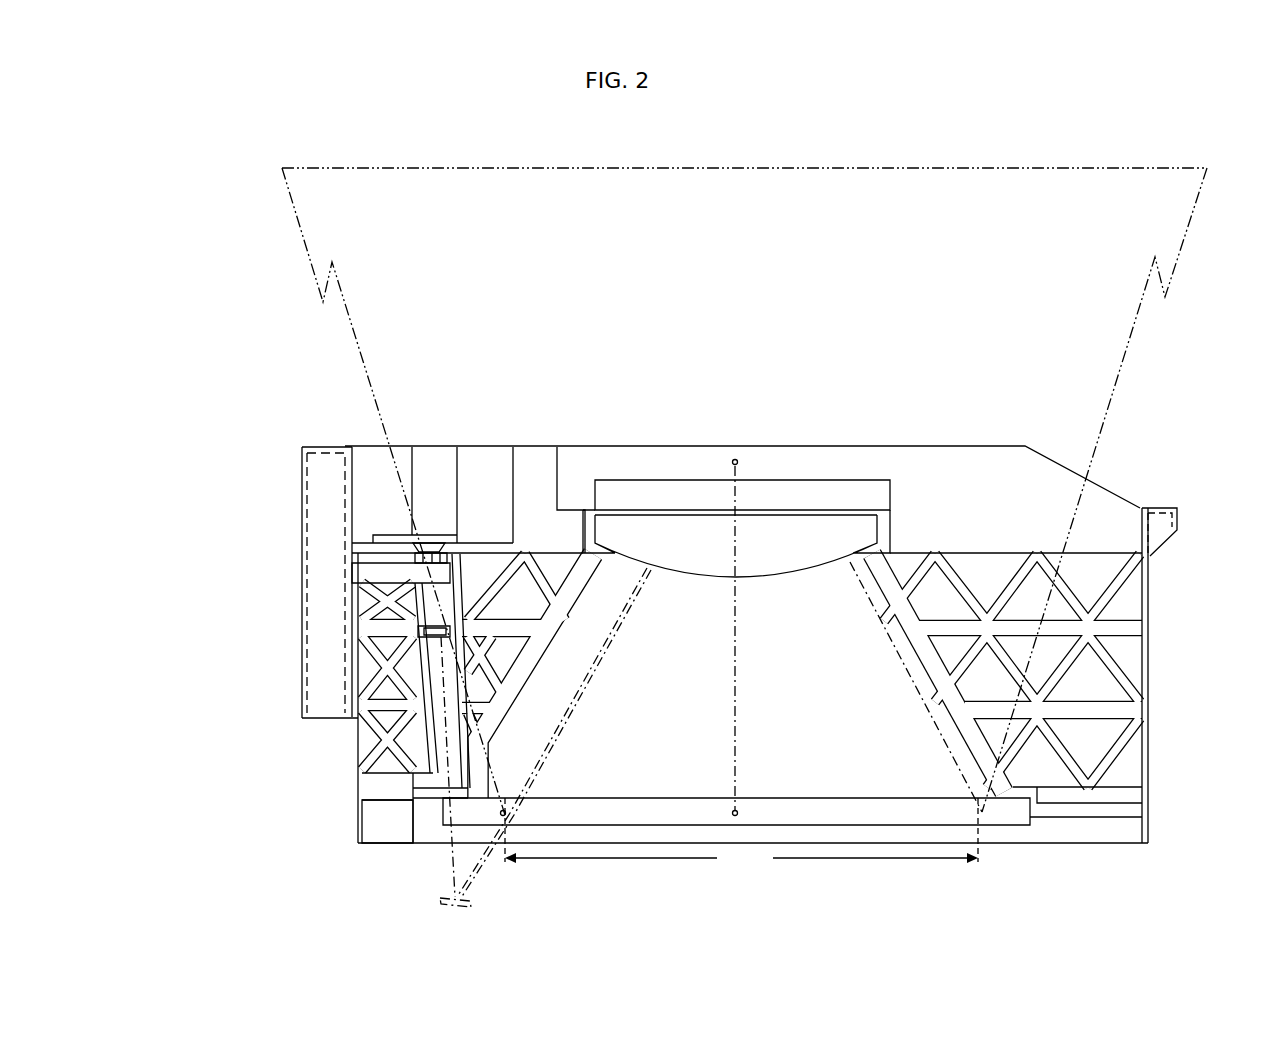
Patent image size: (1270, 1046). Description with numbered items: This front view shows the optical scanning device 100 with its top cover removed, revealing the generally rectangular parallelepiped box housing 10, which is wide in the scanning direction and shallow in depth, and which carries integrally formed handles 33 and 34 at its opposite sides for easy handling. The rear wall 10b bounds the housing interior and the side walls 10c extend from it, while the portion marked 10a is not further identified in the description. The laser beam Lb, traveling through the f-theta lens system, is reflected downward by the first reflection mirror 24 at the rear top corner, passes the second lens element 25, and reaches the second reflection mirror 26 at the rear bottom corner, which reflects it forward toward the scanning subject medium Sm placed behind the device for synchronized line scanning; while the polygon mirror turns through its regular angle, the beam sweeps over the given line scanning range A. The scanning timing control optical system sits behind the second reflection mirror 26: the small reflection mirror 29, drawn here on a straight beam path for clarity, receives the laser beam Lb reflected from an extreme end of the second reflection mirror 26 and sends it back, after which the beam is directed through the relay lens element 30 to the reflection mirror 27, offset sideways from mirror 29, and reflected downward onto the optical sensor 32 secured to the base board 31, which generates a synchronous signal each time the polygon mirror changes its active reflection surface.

The optical scanning device 100 is at (301, 433).
The box housing 10 is at (1040, 447).
The top surface of housing 10a is at (557, 446).
The rear wall 10b is at (820, 683).
The side walls 10c is at (365, 812).
The first reflection mirror 24 is at (868, 481).
The second lens element 25 is at (877, 533).
The second reflection mirror 26 is at (893, 823).
The reflection mirror 27 is at (363, 573).
The reflection mirror 29 is at (462, 897).
The relay lens element 30 is at (445, 630).
The base board 31 is at (384, 534).
The optical sensor 32 is at (437, 543).
The handle 33 is at (302, 485).
The handle 34 is at (1177, 503).
The scanning subject medium Sm is at (743, 465).
The laser beam Lb is at (583, 677).
The line scanning range A is at (741, 835).